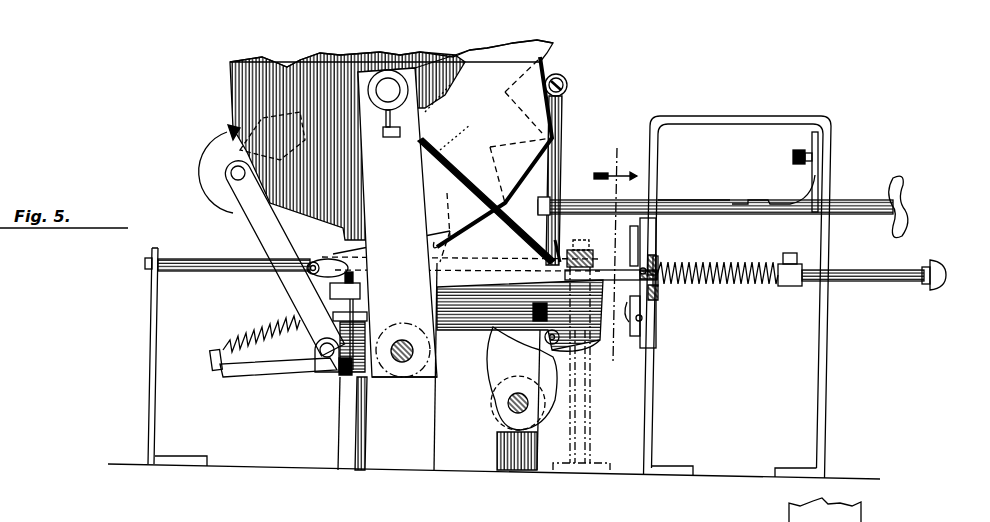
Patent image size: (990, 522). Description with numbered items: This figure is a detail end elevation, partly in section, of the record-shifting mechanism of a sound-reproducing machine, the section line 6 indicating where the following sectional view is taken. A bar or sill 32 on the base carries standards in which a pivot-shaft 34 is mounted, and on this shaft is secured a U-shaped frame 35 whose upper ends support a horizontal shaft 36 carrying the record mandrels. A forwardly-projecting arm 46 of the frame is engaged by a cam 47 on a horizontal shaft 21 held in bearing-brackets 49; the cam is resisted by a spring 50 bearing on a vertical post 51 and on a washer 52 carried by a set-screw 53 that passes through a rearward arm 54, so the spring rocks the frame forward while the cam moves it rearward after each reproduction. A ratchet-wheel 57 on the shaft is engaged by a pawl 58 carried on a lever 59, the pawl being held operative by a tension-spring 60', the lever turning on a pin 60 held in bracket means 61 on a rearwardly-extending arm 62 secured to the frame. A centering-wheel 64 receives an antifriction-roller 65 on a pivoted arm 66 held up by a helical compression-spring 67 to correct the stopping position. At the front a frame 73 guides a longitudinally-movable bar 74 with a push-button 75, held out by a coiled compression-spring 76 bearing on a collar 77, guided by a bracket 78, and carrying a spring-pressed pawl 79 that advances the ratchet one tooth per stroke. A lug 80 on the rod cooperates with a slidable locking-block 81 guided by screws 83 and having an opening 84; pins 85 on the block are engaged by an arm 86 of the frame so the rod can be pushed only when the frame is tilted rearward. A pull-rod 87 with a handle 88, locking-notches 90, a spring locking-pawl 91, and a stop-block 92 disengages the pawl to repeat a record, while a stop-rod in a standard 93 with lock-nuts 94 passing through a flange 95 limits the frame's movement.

The section line 6- 6 is at (615, 255).
The horizontally-disposed shaft 21 is at (514, 410).
The bar or sill 32 is at (432, 445).
The pivot-shaft 34 is at (406, 364).
The U-shaped frame 35 is at (391, 208).
The horizontal shaft 36 is at (380, 96).
The forwardly-projecting arm 46 is at (560, 340).
The cam 47 is at (500, 362).
The bearing-brackets 49 is at (498, 460).
The spring 50 is at (340, 372).
The vertical post or standard 51 is at (348, 418).
The washer 52 is at (368, 318).
The adjustable set-screw 53 is at (360, 304).
The arm 54 is at (330, 292).
The ratchet-wheel 57 is at (484, 138).
The pawl 58 is at (562, 120).
The lever 59 is at (476, 335).
The pin 60 is at (414, 277).
The tension-spring 60' is at (525, 251).
The bracket means 61 is at (320, 351).
The rearwardly-extending arm 62 is at (246, 383).
The centering-wheel 64 is at (550, 60).
The antifriction-roller 65 is at (214, 152).
The pivotally-mounted arm 66 is at (254, 218).
The helical compression-spring 67 is at (254, 330).
The frame 73 is at (657, 422).
The longitudinally-movable bar 74 is at (872, 284).
The thumb-piece or push-button 75 is at (940, 289).
The coiled compression-spring 76 is at (736, 286).
The collar 77 is at (790, 286).
The bracket 78 is at (150, 311).
The spring-pressed pawl 79 is at (337, 263).
The lug or finger 80 is at (657, 274).
The slidable locking-block 81 is at (647, 243).
The guiding-screws 83 is at (632, 245).
The opening 84 is at (657, 262).
The pins 85 is at (641, 270).
The arm 86 is at (658, 290).
The pull-rod 87 is at (712, 200).
The handle or pole 88 is at (892, 182).
The locking-notches 90 is at (662, 197).
The spring locking-pawl 91 is at (770, 200).
The stop-block 92 is at (819, 172).
The standard 93 is at (595, 432).
The lock-nuts 94 is at (582, 352).
The flange 95 is at (575, 262).